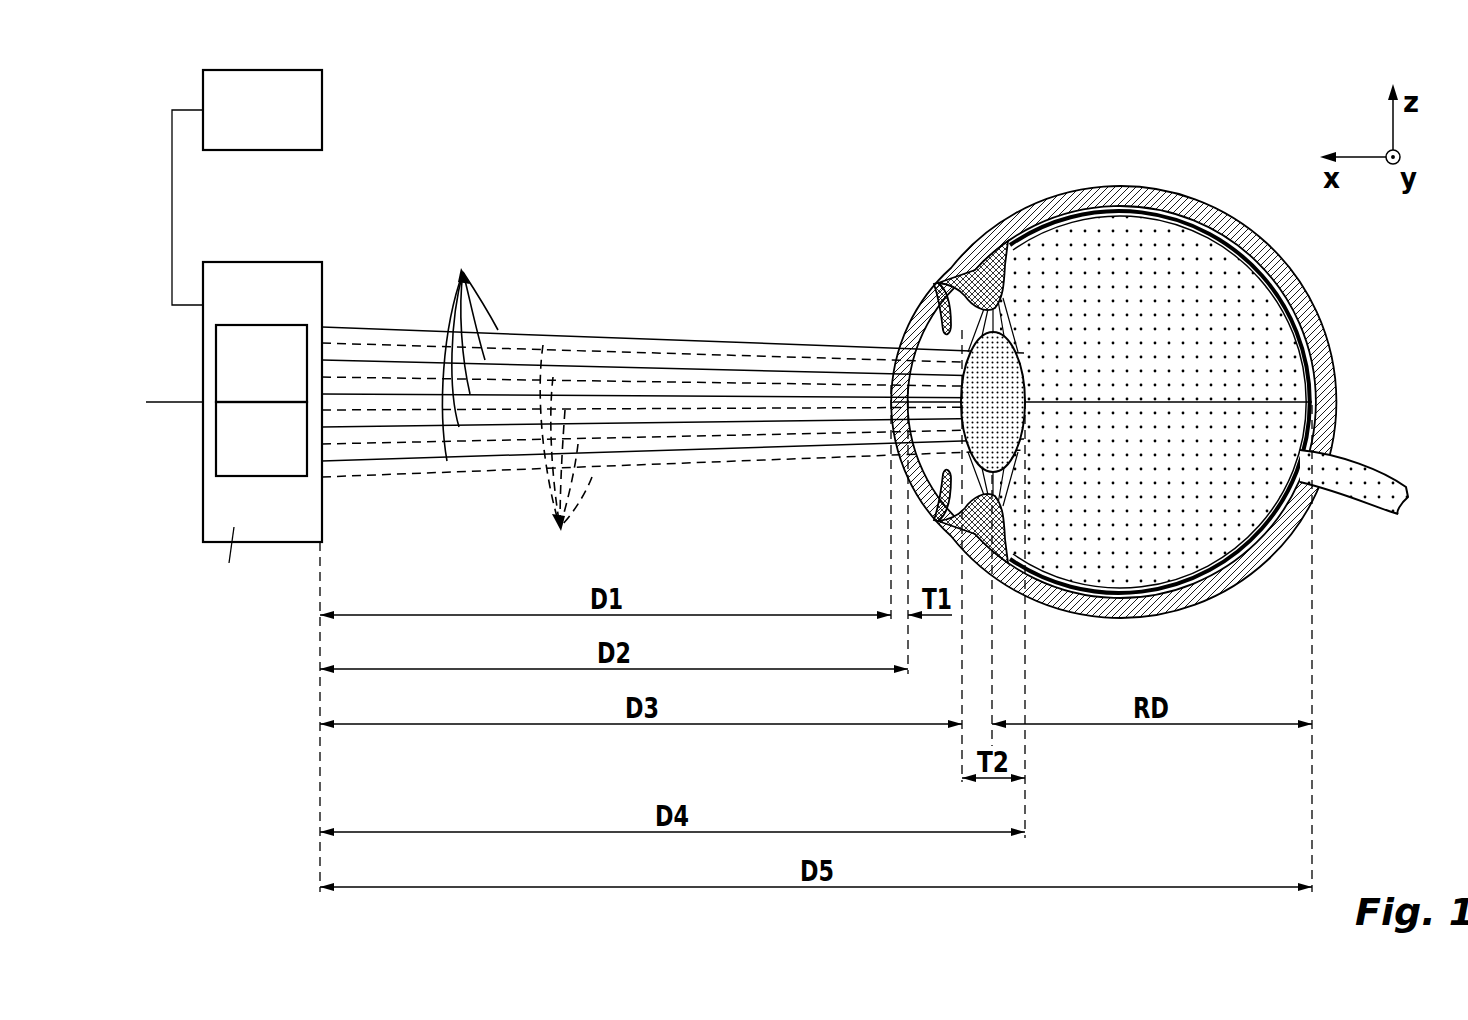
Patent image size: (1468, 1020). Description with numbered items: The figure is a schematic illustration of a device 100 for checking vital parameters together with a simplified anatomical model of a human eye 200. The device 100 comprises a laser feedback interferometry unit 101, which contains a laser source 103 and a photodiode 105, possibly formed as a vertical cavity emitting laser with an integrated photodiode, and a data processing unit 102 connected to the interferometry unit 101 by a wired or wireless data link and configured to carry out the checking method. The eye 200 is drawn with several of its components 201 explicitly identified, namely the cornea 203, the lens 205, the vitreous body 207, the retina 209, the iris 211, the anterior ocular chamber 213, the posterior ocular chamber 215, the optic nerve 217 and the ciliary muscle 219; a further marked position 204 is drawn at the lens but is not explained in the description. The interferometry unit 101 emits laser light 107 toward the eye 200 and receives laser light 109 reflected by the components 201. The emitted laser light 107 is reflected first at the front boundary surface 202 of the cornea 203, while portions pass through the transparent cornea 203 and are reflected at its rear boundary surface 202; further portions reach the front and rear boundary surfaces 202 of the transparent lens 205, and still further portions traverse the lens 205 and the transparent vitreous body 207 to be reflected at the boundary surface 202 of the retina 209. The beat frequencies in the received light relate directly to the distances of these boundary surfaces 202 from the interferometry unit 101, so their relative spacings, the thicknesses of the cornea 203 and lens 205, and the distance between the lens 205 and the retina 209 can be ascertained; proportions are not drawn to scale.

The device for checking vital parameters 100 is at (123, 155).
The laser feedback interferometry unit 101 is at (286, 307).
The data processing unit 102 is at (285, 125).
The laser source 103 is at (284, 382).
The photodiode 105 is at (284, 456).
The emitted laser light 107 is at (469, 350).
The reflected laser light 109 is at (563, 453).
The human eye 200 is at (1242, 175).
The components of the eye 201 is at (1101, 401).
The boundary surface 202 is at (891, 578).
The cornea 203 is at (912, 350).
The lens center position 204 is at (992, 648).
The lens 205 is at (1000, 368).
The vitreous body 207 is at (1255, 310).
The retina 209 is at (1238, 585).
The iris 211 is at (950, 460).
The anterior ocular chamber 213 is at (935, 332).
The posterior ocular chamber 215 is at (962, 322).
The optic nerve 217 is at (1375, 480).
The ciliary muscle 219 is at (1013, 305).